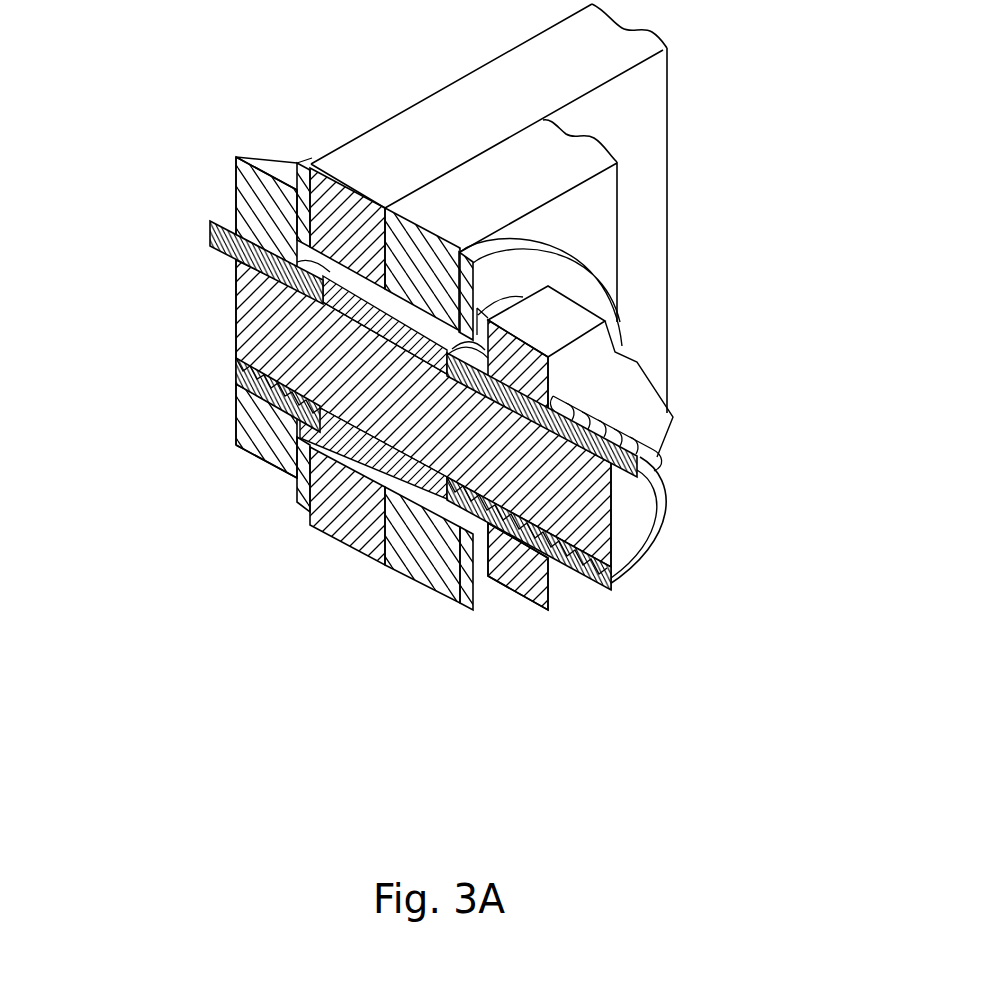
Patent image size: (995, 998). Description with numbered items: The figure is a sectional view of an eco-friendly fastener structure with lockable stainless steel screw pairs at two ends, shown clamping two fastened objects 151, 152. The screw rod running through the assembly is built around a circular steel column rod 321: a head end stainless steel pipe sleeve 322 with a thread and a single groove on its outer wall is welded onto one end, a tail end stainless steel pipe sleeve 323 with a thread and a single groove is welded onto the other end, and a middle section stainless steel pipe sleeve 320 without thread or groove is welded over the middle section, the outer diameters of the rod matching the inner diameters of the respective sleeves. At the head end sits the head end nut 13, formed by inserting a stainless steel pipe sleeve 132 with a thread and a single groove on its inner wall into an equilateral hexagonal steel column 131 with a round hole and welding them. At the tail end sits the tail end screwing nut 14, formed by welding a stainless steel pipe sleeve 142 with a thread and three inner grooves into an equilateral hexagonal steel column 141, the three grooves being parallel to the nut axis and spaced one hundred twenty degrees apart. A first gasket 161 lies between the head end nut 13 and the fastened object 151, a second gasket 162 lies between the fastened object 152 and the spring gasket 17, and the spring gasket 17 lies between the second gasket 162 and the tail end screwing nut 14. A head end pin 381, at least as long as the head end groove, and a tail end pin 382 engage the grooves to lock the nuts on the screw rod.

The head end nut 13 is at (145, 475).
The equilateral hexagonal steel column 131 is at (257, 438).
The stainless steel pipe sleeve with thread and single groove on inner wall 132 is at (250, 390).
The tail end screwing nut 14 is at (757, 318).
The equilateral hexagonal steel column 141 is at (595, 357).
The stainless steel pipe sleeve with thread and three grooves on inner wall 142 is at (580, 405).
The fastened object 151 is at (433, 127).
The fastened object 152 is at (593, 210).
The gasket 161 is at (300, 500).
The gasket 162 is at (462, 610).
The spring gasket 17 is at (478, 563).
The middle section stainless steel pipe sleeve 320 is at (302, 294).
The circular steel column rod 321 is at (632, 505).
The head end stainless steel pipe sleeve with thread and single groove on outer wall 322 is at (240, 358).
The tail end stainless steel pipe sleeve with thread and single groove on outer wall 323 is at (591, 580).
The head end pin 381 is at (212, 215).
The tail end pin 382 is at (660, 453).